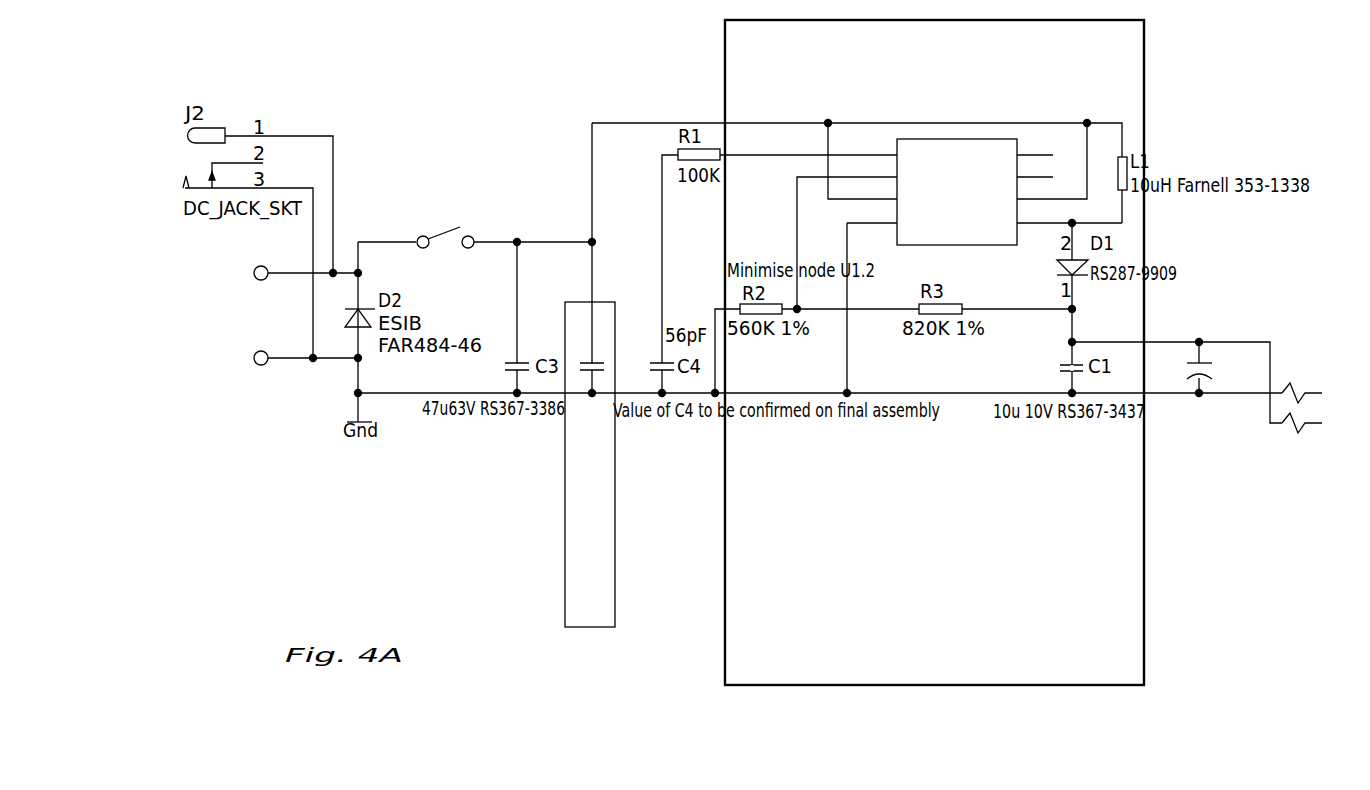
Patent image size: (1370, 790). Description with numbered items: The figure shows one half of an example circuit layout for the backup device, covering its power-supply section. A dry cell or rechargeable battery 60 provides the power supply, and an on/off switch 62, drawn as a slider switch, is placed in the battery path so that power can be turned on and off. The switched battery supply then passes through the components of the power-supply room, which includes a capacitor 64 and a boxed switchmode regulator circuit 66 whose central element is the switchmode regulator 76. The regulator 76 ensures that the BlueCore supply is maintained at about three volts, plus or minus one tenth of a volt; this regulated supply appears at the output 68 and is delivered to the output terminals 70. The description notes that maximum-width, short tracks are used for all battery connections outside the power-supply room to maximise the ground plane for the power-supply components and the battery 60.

The battery 60 is at (254, 273).
The on/off switch 62 is at (460, 227).
The capacitor C2 64 is at (615, 563).
The voltage converter circuit 66 is at (726, 617).
The +3V supply output 68 is at (1257, 340).
The output terminals 70 is at (1283, 393).
The switchmode regulator 76 is at (952, 138).